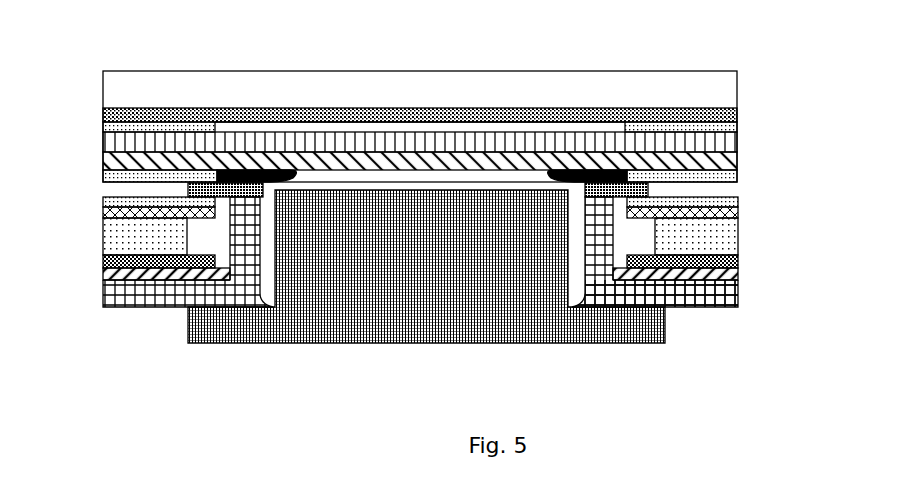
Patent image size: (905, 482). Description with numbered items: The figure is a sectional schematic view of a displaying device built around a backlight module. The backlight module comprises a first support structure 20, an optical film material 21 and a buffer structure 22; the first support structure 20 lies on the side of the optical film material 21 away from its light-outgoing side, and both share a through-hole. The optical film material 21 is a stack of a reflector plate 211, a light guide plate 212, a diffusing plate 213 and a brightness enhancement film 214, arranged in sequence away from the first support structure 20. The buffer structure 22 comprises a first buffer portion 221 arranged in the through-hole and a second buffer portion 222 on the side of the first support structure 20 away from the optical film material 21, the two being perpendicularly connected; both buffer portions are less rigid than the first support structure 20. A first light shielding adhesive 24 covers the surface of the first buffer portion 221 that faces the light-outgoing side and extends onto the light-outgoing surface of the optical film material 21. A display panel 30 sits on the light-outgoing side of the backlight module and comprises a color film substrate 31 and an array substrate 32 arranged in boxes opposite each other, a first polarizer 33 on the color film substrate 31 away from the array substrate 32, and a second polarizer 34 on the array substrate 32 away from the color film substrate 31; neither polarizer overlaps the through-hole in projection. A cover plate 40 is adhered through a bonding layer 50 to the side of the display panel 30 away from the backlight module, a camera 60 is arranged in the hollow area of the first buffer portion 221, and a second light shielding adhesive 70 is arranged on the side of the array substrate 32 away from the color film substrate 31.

The first support structure 20 is at (105, 273).
The optical film material 21 is at (431, 225).
The reflector plate 211 is at (428, 261).
The light guide plate 212 is at (120, 240).
The diffusing plate 213 is at (103, 213).
The brightness enhancement film 214 is at (103, 203).
The buffer structure 22 is at (420, 302).
The first buffer portion 221 is at (240, 257).
The second buffer portion 222 is at (237, 375).
The first light shielding adhesive 24 is at (188, 188).
The display panel 30 is at (420, 91).
The color film substrate 31 is at (250, 143).
The array substrate 32 is at (288, 165).
The first polarizer 33 is at (200, 125).
The second polarizer 34 is at (173, 177).
The cover plate 40 is at (672, 85).
The bonding layer 50 is at (642, 113).
The camera 60 is at (443, 318).
The second light shielding adhesive 70 is at (605, 167).